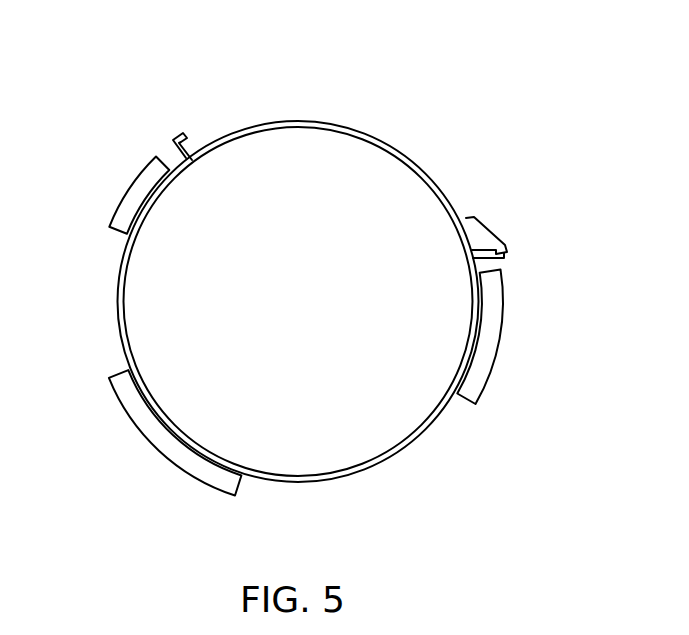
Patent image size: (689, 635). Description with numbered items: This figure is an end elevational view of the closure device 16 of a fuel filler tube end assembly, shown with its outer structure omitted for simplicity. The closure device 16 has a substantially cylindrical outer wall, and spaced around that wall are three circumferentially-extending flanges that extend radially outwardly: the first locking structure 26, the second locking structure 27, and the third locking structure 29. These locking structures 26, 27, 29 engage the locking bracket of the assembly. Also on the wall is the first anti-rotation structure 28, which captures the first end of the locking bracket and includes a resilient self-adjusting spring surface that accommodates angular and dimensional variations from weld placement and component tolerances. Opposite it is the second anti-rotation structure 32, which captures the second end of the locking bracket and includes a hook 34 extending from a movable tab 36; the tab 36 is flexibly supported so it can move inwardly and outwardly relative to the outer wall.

The closure device 16 is at (189, 80).
The first locking structure 26 is at (121, 200).
The second locking structure 27 is at (165, 443).
The first anti-rotation structure 28 is at (176, 130).
The third locking structure 29 is at (495, 326).
The second anti-rotation structure 32 is at (497, 130).
The hook 34 is at (505, 252).
The movable tab 36 is at (478, 232).